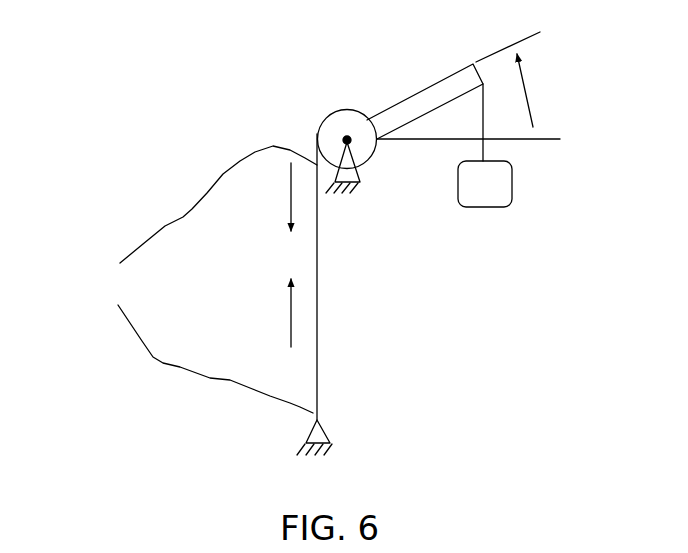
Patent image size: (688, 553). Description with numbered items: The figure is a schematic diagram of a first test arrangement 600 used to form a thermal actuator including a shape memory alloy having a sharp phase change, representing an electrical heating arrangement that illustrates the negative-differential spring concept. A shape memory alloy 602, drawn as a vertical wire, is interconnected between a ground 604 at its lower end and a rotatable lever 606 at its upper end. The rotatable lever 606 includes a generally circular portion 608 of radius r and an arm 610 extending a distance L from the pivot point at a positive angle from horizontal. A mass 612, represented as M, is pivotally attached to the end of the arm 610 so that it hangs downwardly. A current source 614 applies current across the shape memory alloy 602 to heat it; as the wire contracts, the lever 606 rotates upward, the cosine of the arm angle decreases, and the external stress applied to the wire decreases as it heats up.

The test arrangement 600 is at (176, 428).
The shape memory alloy 602 is at (318, 333).
The ground 604 is at (330, 433).
The rotatable lever 606 is at (314, 77).
The circular portion 608 is at (347, 109).
The arm 610 is at (438, 79).
The mass 612 is at (512, 185).
The current source 614 is at (176, 279).